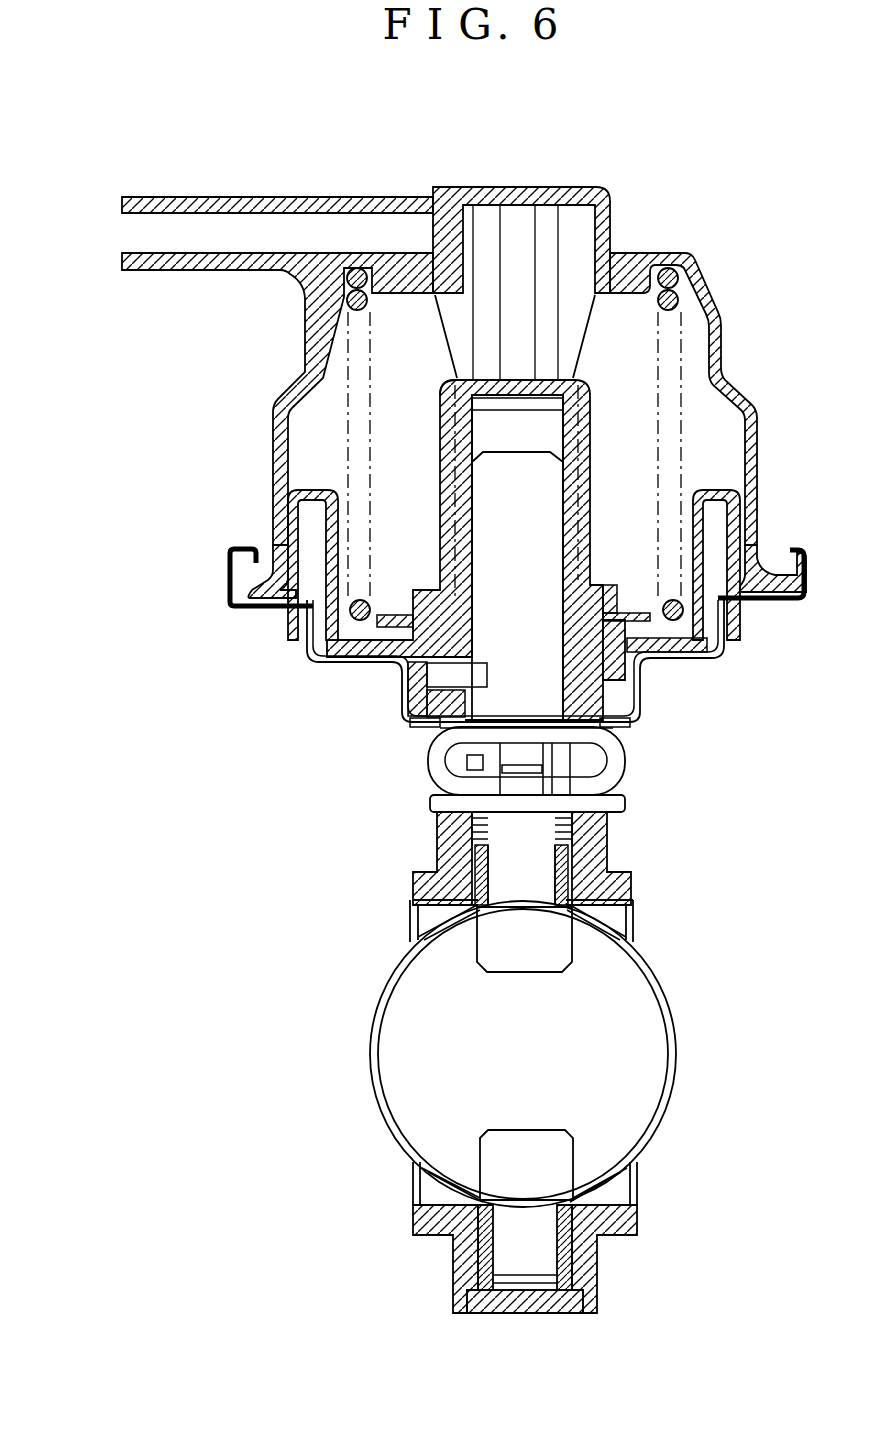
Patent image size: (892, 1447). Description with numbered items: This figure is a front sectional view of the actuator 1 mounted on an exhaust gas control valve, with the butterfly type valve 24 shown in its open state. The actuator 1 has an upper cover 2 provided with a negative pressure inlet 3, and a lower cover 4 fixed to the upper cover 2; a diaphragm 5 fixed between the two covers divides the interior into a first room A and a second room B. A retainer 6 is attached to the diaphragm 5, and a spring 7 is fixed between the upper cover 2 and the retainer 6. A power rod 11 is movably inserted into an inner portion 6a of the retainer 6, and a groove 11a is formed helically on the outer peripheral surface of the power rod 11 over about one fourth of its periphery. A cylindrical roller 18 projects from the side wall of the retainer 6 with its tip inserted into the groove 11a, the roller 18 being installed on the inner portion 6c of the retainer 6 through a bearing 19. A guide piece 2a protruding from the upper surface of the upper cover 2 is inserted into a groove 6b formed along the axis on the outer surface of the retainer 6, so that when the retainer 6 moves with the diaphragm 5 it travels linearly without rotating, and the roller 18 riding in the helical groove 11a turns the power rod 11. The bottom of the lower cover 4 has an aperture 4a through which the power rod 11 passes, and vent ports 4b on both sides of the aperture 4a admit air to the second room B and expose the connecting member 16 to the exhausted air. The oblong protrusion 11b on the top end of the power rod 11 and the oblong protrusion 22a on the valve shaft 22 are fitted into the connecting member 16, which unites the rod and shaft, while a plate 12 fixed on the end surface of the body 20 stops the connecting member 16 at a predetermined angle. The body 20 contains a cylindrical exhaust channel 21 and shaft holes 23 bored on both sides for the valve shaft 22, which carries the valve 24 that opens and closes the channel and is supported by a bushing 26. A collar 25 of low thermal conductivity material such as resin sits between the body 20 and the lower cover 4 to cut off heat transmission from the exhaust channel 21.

The actuator 1 is at (726, 350).
The upper cover 2 is at (272, 445).
The guide piece 2a is at (468, 218).
The negative pressure inlet 3 is at (262, 228).
The lower cover 4 is at (690, 663).
The aperture 4a is at (580, 736).
The vent ports 4b is at (625, 717).
The diaphragm 5 is at (290, 497).
The retainer 6 is at (580, 455).
The inner portion of retainer 6a is at (480, 430).
The groove 6b is at (446, 408).
The inner portion of retainer 6c is at (440, 640).
The spring 7 is at (300, 393).
The power rod 11 is at (483, 503).
The groove 11a is at (505, 645).
The oblong protrusion 11b is at (490, 771).
The plate 12 is at (615, 800).
The connecting member 16 is at (455, 758).
The roller 18 is at (405, 690).
The bearing 19 is at (400, 665).
The body 20 is at (620, 885).
The exhaust channel 21 is at (620, 920).
The valve shaft 22 is at (500, 880).
The oblong protrusion 22a is at (420, 800).
The shaft holes 23 is at (420, 920).
The butterfly type valve 24 is at (635, 1015).
The collar 25 is at (570, 849).
The bushing 26 is at (575, 1300).
The first room A is at (718, 447).
The second room B is at (735, 600).